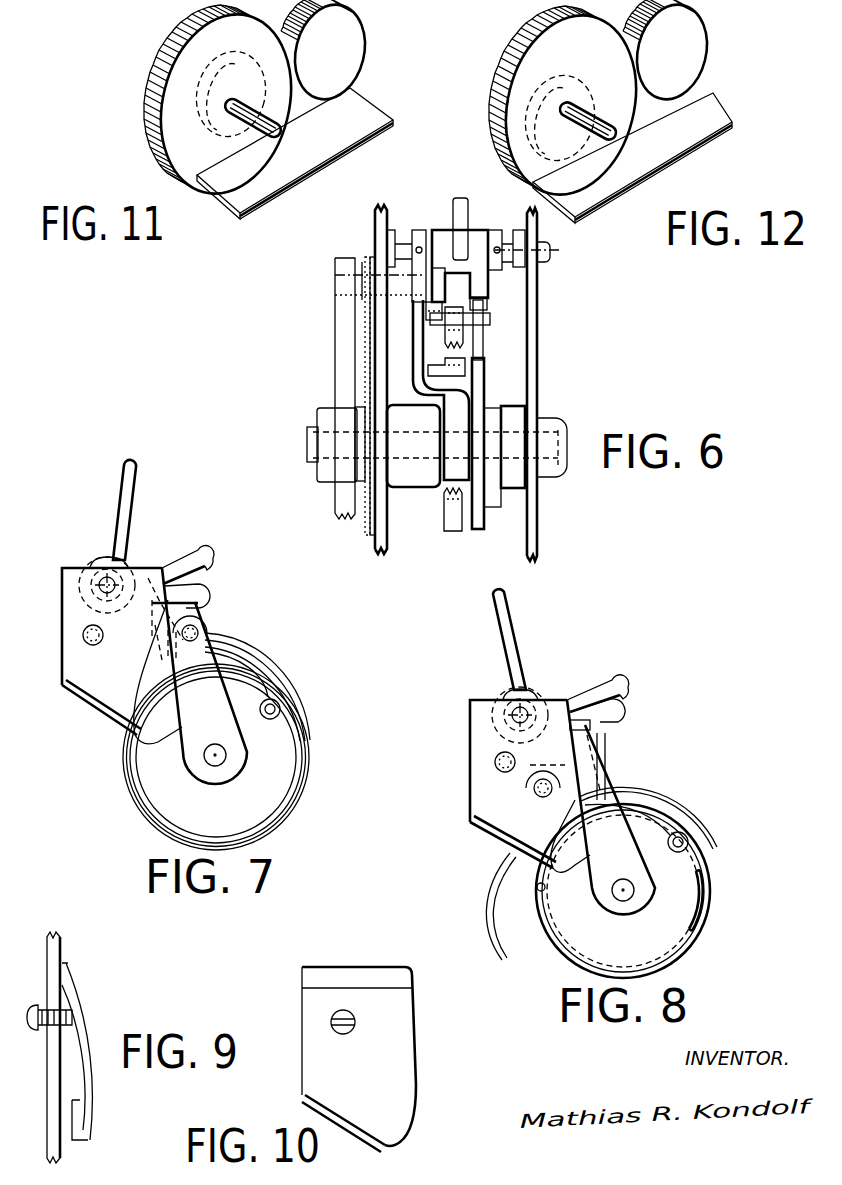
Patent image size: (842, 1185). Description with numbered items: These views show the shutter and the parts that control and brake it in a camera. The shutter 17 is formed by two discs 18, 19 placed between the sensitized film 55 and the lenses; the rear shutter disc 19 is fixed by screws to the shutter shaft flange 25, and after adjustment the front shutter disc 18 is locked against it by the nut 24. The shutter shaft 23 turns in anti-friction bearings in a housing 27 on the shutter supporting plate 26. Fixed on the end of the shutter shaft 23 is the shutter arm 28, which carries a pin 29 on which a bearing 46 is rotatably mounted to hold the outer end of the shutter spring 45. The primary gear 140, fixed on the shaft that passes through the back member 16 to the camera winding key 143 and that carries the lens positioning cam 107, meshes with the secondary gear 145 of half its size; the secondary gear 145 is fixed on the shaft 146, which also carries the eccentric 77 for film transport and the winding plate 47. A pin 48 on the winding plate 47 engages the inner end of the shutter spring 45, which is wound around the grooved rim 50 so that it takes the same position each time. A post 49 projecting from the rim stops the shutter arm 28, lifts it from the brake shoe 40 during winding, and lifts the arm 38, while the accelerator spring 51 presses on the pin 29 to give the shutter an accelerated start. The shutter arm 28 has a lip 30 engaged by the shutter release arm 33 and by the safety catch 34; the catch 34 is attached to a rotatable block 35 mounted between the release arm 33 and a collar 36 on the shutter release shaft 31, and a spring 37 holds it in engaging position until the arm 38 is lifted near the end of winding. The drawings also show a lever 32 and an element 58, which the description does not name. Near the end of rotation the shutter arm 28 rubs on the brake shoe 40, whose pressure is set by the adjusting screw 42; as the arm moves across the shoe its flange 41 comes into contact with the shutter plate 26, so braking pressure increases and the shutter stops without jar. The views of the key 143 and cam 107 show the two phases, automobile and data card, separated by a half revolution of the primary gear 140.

In FIG. 6, the back member 16 is at (531, 520).
In FIG. 6, the shutter 17 is at (345, 366).
In FIG. 6, the front shutter disc 18 is at (367, 382).
In FIG. 6, the rear shutter disc 19 is at (373, 398).
In FIG. 6, the shutter shaft 23 is at (313, 452).
In FIG. 7, the shutter shaft 23 is at (208, 755).
In FIG. 8, the shutter shaft 23 is at (634, 889).
In FIG. 6, the nut 24 is at (325, 470).
In FIG. 6, the shutter shaft flange 25 is at (357, 475).
In FIG. 6, the shutter supporting plate 26 is at (378, 223).
In FIG. 9, the shutter supporting plate 26 is at (55, 950).
In FIG. 6, the housing 27 is at (425, 478).
In FIG. 6, the shutter arm 28 is at (417, 330).
In FIG. 7, the shutter arm 28 is at (193, 692).
In FIG. 8, the shutter arm 28 is at (555, 805).
In FIG. 6, the pin 29 is at (487, 320).
In FIG. 7, the pin 29 is at (198, 632).
In FIG. 8, the pin 29 is at (535, 789).
In FIG. 7, the lip 30 is at (197, 606).
In FIG. 8, the lip 30 is at (535, 771).
In FIG. 6, the shutter release shaft 31 is at (550, 252).
In FIG. 7, the shutter release shaft 31 is at (100, 585).
In FIG. 8, the shutter release shaft 31 is at (515, 715).
In FIG. 7, the lever 32 is at (120, 523).
In FIG. 8, the lever 32 is at (503, 658).
In FIG. 6, the shutter release arm 33 is at (418, 272).
In FIG. 7, the shutter release arm 33 is at (207, 600).
In FIG. 8, the shutter release arm 33 is at (625, 713).
In FIG. 6, the safety catch 34 is at (435, 280).
In FIG. 7, the safety catch 34 is at (130, 569).
In FIG. 8, the safety catch 34 is at (622, 690).
In FIG. 6, the rotatable block 35 is at (470, 262).
In FIG. 6, the collar 36 is at (505, 264).
In FIG. 6, the spring 37 is at (460, 222).
In FIG. 6, the arm 38 is at (482, 291).
In FIG. 7, the arm 38 is at (148, 578).
In FIG. 8, the arm 38 is at (590, 725).
In FIG. 7, the brake shoe 40 is at (75, 618).
In FIG. 8, the brake shoe 40 is at (485, 738).
In FIG. 9, the brake shoe 40 is at (88, 1030).
In FIG. 10, the brake shoe 40 is at (388, 997).
In FIG. 7, the flange 41 is at (90, 703).
In FIG. 8, the flange 41 is at (480, 836).
In FIG. 9, the flange 41 is at (78, 1123).
In FIG. 10, the flange 41 is at (340, 1115).
In FIG. 7, the adjusting screw 42 is at (85, 638).
In FIG. 8, the adjusting screw 42 is at (497, 760).
In FIG. 9, the adjusting screw 42 is at (35, 1005).
In FIG. 10, the adjusting screw 42 is at (355, 1022).
In FIG. 6, the shutter spring 45 is at (463, 337).
In FIG. 7, the shutter spring 45 is at (258, 664).
In FIG. 8, the shutter spring 45 is at (718, 840).
In FIG. 7, the bearing 46 is at (208, 634).
In FIG. 6, the winding plate 47 is at (503, 370).
In FIG. 7, the winding plate 47 is at (155, 777).
In FIG. 8, the winding plate 47 is at (660, 927).
In FIG. 6, the pin 48 is at (440, 373).
In FIG. 7, the pin 48 is at (278, 703).
In FIG. 8, the pin 48 is at (690, 846).
In FIG. 6, the post 49 is at (481, 350).
In FIG. 7, the post 49 is at (155, 625).
In FIG. 8, the post 49 is at (605, 760).
In FIG. 6, the grooved rim 50 is at (445, 526).
In FIG. 8, the grooved rim 50 is at (538, 886).
In FIG. 7, the accelerator spring 51 is at (172, 654).
In FIG. 8, the accelerator spring 51 is at (600, 772).
In FIG. 6, the sensitized film 55 is at (372, 294).
In FIG. 6, the edge 58 is at (366, 310).
In FIG. 6, the eccentric 77 is at (490, 490).
In FIG. 11, the cam 107 is at (222, 80).
In FIG. 12, the cam 107 is at (555, 130).
In FIG. 11, the primary gear 140 is at (185, 130).
In FIG. 12, the primary gear 140 is at (565, 65).
In FIG. 11, the camera winding key 143 is at (330, 110).
In FIG. 12, the camera winding key 143 is at (673, 108).
In FIG. 11, the secondary gear 145 is at (342, 41).
In FIG. 12, the secondary gear 145 is at (687, 45).
In FIG. 6, the secondary gear 145 is at (515, 470).
In FIG. 6, the shaft 146 is at (548, 450).